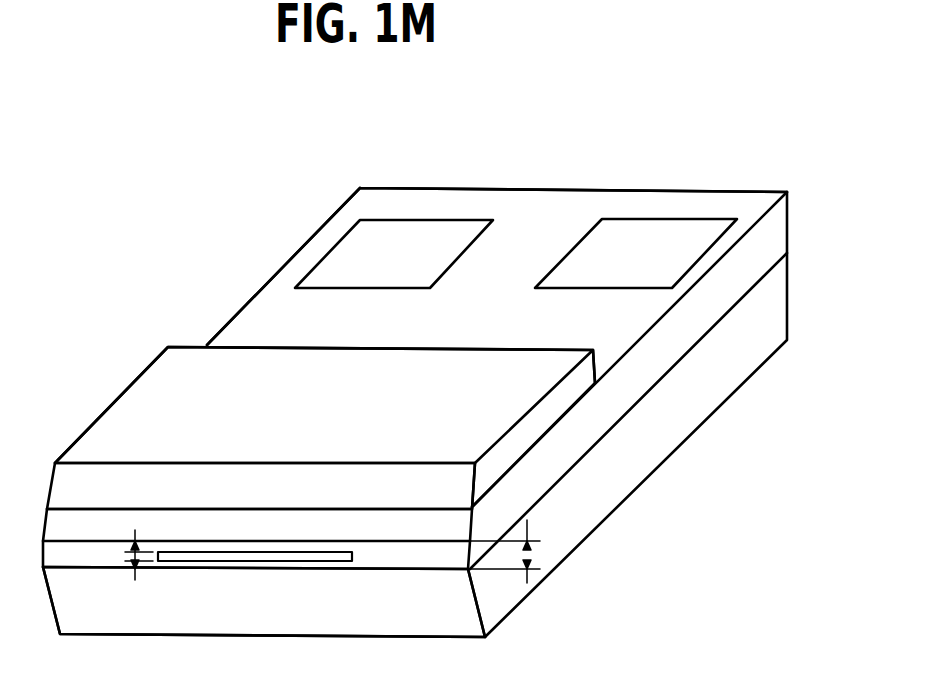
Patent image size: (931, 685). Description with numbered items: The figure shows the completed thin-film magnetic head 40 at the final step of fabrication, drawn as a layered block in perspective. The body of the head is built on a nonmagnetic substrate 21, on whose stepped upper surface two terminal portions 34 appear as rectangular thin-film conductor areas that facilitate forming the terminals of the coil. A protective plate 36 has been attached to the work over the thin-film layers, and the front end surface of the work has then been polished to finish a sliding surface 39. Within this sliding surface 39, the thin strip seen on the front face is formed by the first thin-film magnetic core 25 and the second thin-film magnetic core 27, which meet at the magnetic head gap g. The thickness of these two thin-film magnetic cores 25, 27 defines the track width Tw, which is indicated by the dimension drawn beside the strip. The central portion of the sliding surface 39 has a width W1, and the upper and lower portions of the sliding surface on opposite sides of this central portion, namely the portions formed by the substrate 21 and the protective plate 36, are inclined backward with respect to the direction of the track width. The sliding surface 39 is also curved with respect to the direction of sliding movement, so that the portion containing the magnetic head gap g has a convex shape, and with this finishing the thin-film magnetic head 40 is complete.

The substrate 21 is at (617, 480).
The thin-film magnetic head 40 is at (277, 212).
The terminal portions 34 is at (643, 235).
The protective plate 36 is at (158, 388).
The first thin-film magnetic core 25 is at (193, 553).
The magnetic head gap g is at (253, 556).
The second thin-film magnetic core 27 is at (322, 553).
The sliding surface 39 is at (452, 563).
The track width Tw is at (119, 555).
The width of central portion of sliding surface W1 is at (504, 551).